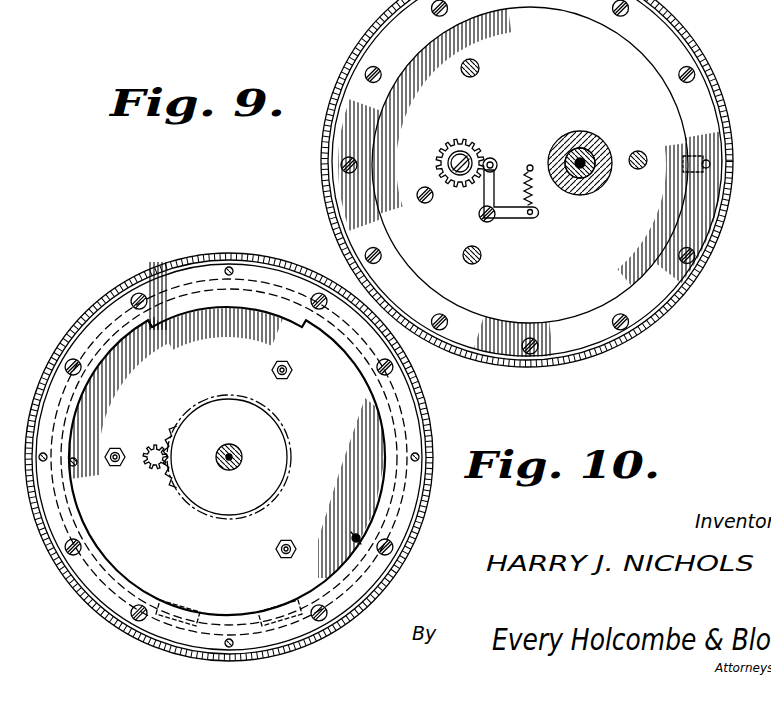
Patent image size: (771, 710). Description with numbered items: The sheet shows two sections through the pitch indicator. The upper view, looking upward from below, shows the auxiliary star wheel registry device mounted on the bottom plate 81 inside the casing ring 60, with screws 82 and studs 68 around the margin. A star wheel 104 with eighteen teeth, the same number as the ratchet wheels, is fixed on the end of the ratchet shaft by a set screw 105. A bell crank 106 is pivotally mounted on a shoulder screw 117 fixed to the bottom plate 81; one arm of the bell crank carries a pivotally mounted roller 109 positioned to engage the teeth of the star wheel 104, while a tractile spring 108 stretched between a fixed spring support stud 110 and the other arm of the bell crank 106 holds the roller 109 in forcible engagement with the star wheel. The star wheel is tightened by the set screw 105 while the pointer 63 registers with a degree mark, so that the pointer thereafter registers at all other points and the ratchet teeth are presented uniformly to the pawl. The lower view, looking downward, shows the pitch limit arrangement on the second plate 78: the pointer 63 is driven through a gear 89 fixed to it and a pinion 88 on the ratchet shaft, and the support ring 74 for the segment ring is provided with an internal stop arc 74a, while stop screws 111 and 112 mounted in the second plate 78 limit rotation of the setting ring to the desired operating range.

In FIG. 9, the casing ring 60 is at (330, 136).
In FIG. 10, the casing ring 60 is at (427, 504).
In FIG. 9, the studs 68 is at (480, 68).
In FIG. 9, the bottom plate 81 is at (549, 103).
In FIG. 9, the fastening screws 82 is at (558, 330).
In FIG. 9, the star wheel 104 is at (457, 140).
In FIG. 9, the set screw 105 is at (440, 164).
In FIG. 9, the bell crank 106 is at (513, 216).
In FIG. 9, the tractile spring 108 is at (533, 205).
In FIG. 9, the roller 109 is at (492, 157).
In FIG. 9, the spring support stud 110 is at (531, 165).
In FIG. 9, the shoulder screw 117 is at (479, 214).
In FIG. 10, the pointer 63 is at (242, 456).
In FIG. 10, the support ring 74 is at (80, 535).
In FIG. 10, the internal stop arc 74a is at (263, 320).
In FIG. 10, the second plate 78 is at (210, 377).
In FIG. 10, the pinion 88 is at (155, 468).
In FIG. 10, the gear 89 is at (170, 437).
In FIG. 10, the stop screw 111 is at (78, 467).
In FIG. 10, the stop screw 112 is at (353, 537).